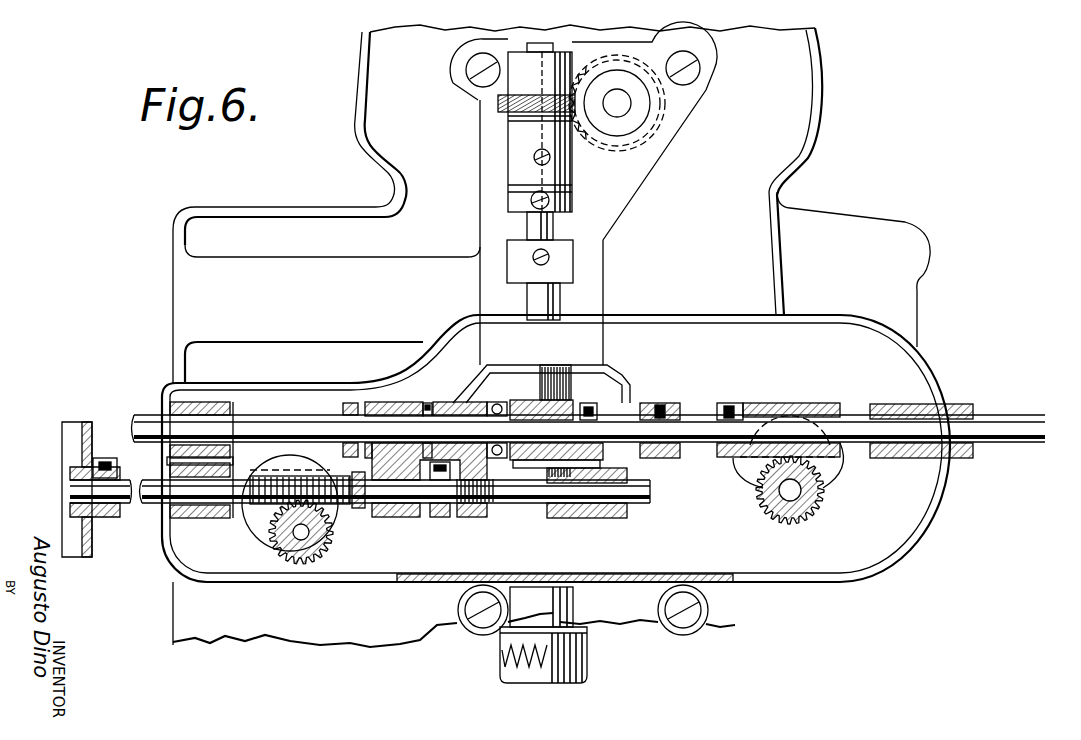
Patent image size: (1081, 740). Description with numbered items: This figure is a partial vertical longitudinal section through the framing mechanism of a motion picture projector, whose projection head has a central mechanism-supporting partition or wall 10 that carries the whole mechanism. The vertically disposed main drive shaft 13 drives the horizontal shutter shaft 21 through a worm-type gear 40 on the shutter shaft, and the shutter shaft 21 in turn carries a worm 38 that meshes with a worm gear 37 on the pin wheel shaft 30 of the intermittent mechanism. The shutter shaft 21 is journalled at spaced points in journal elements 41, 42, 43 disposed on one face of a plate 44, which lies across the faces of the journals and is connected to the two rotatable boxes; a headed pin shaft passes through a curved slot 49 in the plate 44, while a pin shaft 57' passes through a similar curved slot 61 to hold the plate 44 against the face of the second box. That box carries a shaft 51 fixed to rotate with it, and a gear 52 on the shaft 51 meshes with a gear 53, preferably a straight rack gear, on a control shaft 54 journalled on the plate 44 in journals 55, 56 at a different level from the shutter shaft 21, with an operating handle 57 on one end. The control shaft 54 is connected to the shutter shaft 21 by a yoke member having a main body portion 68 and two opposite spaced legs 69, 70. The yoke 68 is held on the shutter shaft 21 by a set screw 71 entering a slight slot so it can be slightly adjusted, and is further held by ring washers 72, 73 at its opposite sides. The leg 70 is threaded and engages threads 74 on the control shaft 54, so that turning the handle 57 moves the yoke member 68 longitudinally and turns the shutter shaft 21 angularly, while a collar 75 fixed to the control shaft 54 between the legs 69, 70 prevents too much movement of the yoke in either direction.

The mechanism-supporting partition or wall 10 is at (797, 140).
The main drive shaft 13 is at (553, 293).
The shutter shaft 21 is at (693, 423).
The pin wheel shaft 30 is at (812, 503).
The worm gear 37 is at (777, 522).
The worm 38 is at (790, 407).
The gear 40 is at (541, 421).
The journal element 41 is at (921, 457).
The journal element 42 is at (657, 407).
The journal element 43 is at (167, 402).
The plate 44 is at (556, 448).
The curved slot 49 is at (823, 470).
The shaft 51 is at (272, 558).
The gear 52 is at (325, 560).
The gear 53 is at (262, 480).
The control shaft 54 is at (197, 518).
The journal 55 is at (173, 627).
The journal 56 is at (590, 513).
The operating handle 57 is at (67, 489).
The pin shaft 57' is at (290, 470).
The curved slot 61 is at (258, 504).
The yoke member 68 is at (398, 410).
The leg 69 is at (393, 513).
The threaded leg 70 is at (477, 518).
The set screw 71 is at (340, 400).
The ring washer 72 is at (370, 400).
The ring washer 73 is at (497, 407).
The threads 74 is at (497, 503).
The collar 75 is at (434, 512).